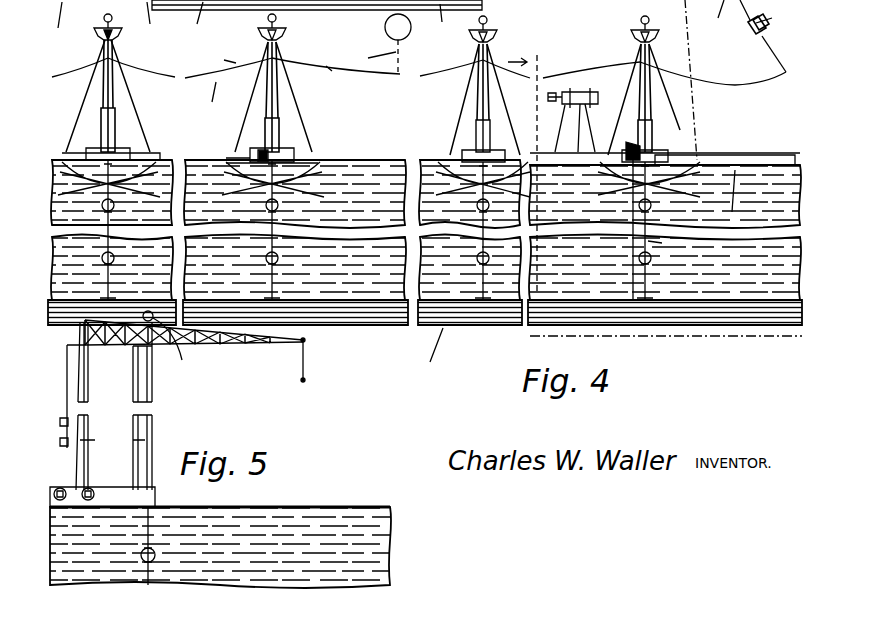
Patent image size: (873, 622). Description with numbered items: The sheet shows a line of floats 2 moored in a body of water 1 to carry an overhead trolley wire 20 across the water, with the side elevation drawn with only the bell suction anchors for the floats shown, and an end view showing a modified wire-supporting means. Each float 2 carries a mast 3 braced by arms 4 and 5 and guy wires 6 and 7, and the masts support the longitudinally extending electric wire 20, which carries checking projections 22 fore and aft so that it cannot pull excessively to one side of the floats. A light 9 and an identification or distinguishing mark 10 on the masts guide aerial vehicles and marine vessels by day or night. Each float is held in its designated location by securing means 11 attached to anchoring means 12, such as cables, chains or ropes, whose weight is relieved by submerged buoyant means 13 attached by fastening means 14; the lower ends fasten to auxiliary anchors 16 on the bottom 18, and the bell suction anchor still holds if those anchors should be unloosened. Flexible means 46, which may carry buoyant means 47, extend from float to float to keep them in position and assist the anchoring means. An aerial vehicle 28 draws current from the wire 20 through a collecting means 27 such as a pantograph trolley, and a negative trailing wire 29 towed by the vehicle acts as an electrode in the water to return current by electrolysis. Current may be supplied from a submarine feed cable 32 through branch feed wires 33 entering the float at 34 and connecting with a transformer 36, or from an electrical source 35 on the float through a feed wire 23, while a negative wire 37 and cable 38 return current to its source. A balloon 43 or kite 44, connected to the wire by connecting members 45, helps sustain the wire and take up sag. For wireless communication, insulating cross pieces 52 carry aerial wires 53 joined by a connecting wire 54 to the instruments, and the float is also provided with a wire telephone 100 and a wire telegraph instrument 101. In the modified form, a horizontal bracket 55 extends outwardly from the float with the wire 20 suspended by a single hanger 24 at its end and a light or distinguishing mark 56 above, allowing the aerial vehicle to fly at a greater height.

In FIG. 4, the body of water 1 is at (538, 162).
In FIG. 5, the body of water 1 is at (362, 506).
In FIG. 4, the float 2 is at (96, 148).
In FIG. 5, the float 2 is at (102, 497).
In FIG. 4, the mast 3 is at (116, 130).
In FIG. 5, the mast 3 is at (95, 440).
In FIG. 4, the arm 4 is at (660, 157).
In FIG. 4, the arm 5 is at (455, 152).
In FIG. 4, the guy wire 6 is at (280, 136).
In FIG. 4, the guy wire 7 is at (462, 103).
In FIG. 5, the light 9 is at (166, 346).
In FIG. 4, the identification mark 10 is at (280, 18).
In FIG. 4, the securing means 11 is at (712, 162).
In FIG. 5, the securing means 11 is at (152, 545).
In FIG. 4, the anchoring means 12 is at (562, 126).
In FIG. 4, the submerged buoyant means 13 is at (490, 250).
In FIG. 5, the submerged buoyant means 13 is at (60, 556).
In FIG. 4, the fastening means 14 is at (114, 215).
In FIG. 4, the auxiliary anchor 16 is at (156, 21).
In FIG. 4, the bottom 18 is at (314, 190).
In FIG. 4, the trolley wire 20 is at (493, 90).
In FIG. 5, the trolley wire 20 is at (305, 381).
In FIG. 4, the checking projection 22 is at (258, 61).
In FIG. 5, the feed wire 23 is at (66, 372).
In FIG. 5, the single hanger 24 is at (302, 368).
In FIG. 4, the current collecting means 27 is at (588, 88).
In FIG. 4, the aerial vehicle 28 is at (582, 104).
In FIG. 4, the trailing wire 29 is at (566, 106).
In FIG. 4, the submarine feed cable 32 is at (356, 307).
In FIG. 4, the branch feed wire 33 is at (618, 245).
In FIG. 4, the entry point 34 is at (252, 156).
In FIG. 4, the electrical source 35 is at (262, 150).
In FIG. 5, the electrical source 35 is at (58, 488).
In FIG. 4, the transformer 36 is at (632, 146).
In FIG. 5, the transformer 36 is at (92, 488).
In FIG. 4, the negative current wire 37 is at (648, 262).
In FIG. 4, the return cable 38 is at (732, 312).
In FIG. 4, the balloon 43 is at (398, 43).
In FIG. 4, the kite 44 is at (743, 36).
In FIG. 4, the connecting member 45 is at (570, 33).
In FIG. 4, the flexible means 46 is at (732, 212).
In FIG. 4, the buoyant means 47 is at (330, 166).
In FIG. 4, the insulating cross piece 52 is at (284, 32).
In FIG. 5, the aerial wire 53 is at (97, 362).
In FIG. 5, the connecting wire 54 is at (133, 408).
In FIG. 5, the horizontal bracket 55 is at (232, 345).
In FIG. 5, the light or distinguishing mark 56 is at (305, 341).
In FIG. 5, the wire telephone 100 is at (60, 441).
In FIG. 5, the wire telegraph instrument 101 is at (60, 420).